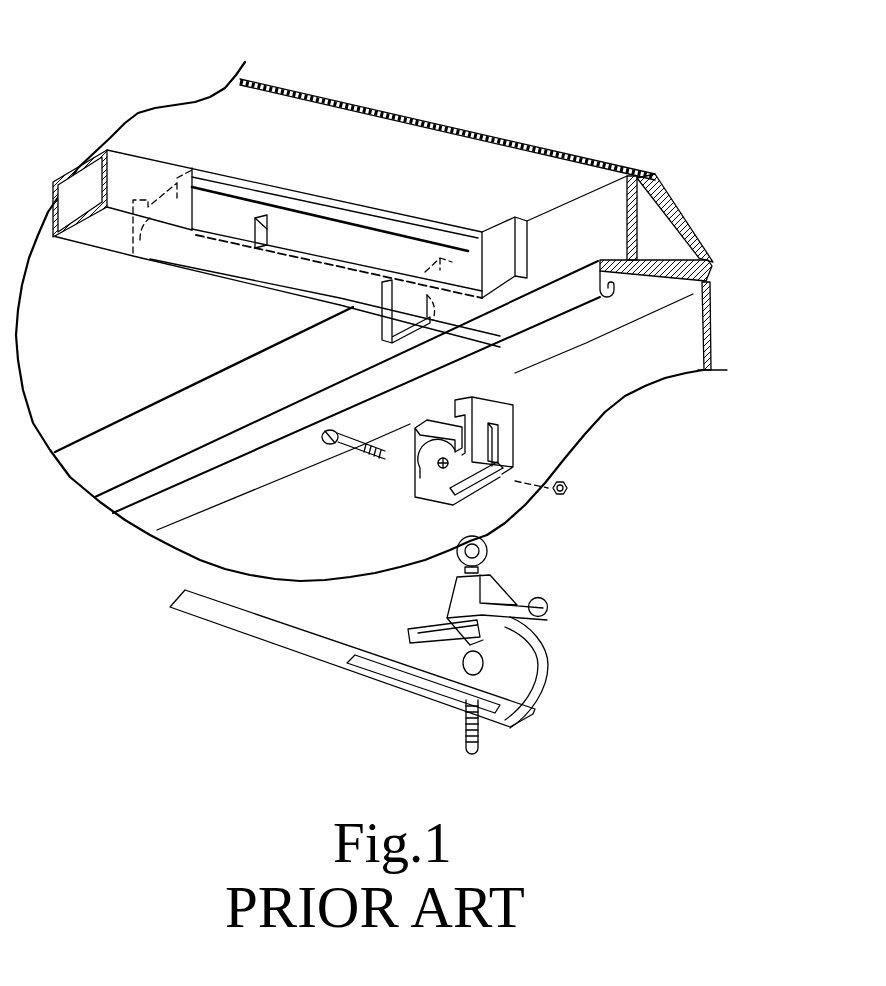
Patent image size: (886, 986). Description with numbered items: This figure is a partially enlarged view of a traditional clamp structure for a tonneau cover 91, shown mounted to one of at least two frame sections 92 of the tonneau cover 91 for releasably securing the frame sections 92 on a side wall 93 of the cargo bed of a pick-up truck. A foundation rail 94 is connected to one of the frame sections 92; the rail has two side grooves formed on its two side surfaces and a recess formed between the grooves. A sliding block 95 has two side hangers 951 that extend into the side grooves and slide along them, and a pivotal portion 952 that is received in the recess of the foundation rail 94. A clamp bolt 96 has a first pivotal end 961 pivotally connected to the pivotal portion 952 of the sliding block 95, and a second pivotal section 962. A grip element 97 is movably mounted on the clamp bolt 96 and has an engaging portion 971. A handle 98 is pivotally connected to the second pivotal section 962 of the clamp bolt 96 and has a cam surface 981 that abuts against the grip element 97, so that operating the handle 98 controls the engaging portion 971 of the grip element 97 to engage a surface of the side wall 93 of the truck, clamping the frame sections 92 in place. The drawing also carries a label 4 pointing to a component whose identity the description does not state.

The bracket 4 is at (237, 194).
The tonneau cover 91 is at (417, 118).
The frame section 92 is at (125, 165).
The side wall 93 is at (716, 323).
The foundation rail 94 is at (194, 302).
The sliding block 95 is at (350, 487).
The side hanger 951 is at (467, 400).
The pivotal portion 952 is at (412, 470).
The clamp bolt 96 is at (402, 657).
The first pivotal end 961 is at (483, 537).
The second pivotal section 962 is at (526, 759).
The grip element 97 is at (427, 629).
The engaging portion 971 is at (606, 584).
The handle 98 is at (349, 671).
The cam surface 981 is at (550, 652).